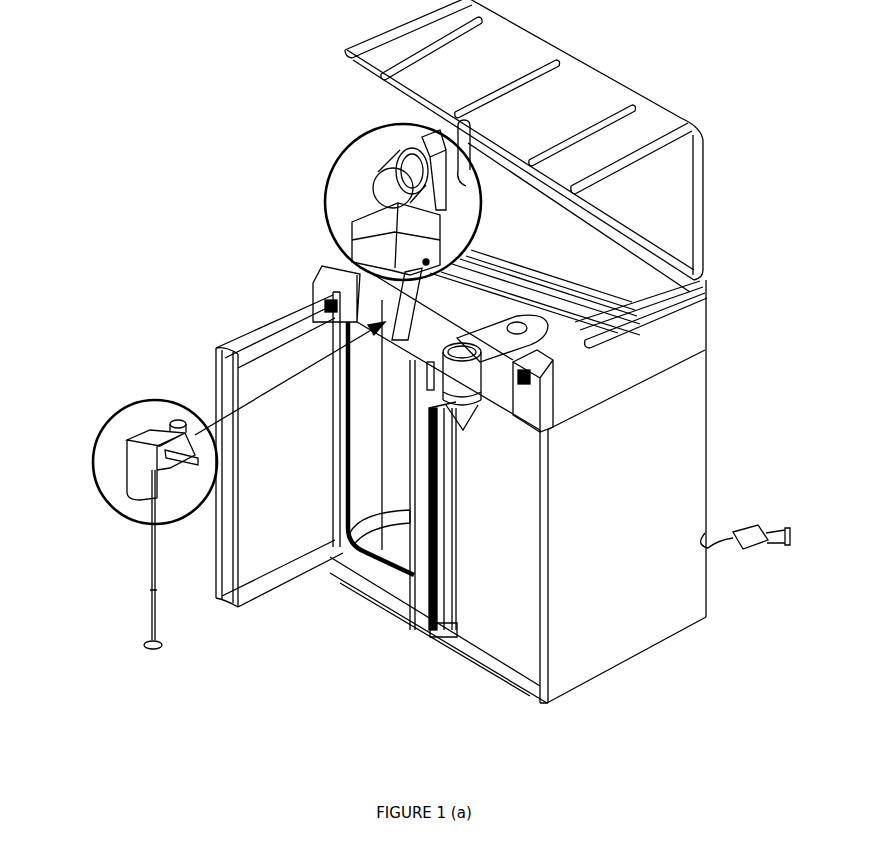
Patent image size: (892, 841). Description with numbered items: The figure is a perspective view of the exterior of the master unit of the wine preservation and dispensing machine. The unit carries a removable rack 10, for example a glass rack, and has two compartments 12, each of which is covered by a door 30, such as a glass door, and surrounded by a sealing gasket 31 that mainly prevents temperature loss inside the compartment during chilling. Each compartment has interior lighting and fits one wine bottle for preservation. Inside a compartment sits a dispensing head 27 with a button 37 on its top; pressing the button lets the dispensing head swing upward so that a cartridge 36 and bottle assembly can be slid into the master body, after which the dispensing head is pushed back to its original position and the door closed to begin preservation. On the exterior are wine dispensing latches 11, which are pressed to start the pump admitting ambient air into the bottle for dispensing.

The rack 10 is at (720, 181).
The dispensing latch 11 is at (321, 253).
The compartment 12 is at (386, 481).
The dispensing head 27 is at (325, 144).
The door 30 is at (516, 621).
The sealing gasket 31 is at (400, 570).
The cartridge 36 is at (106, 402).
The button 37 is at (531, 322).